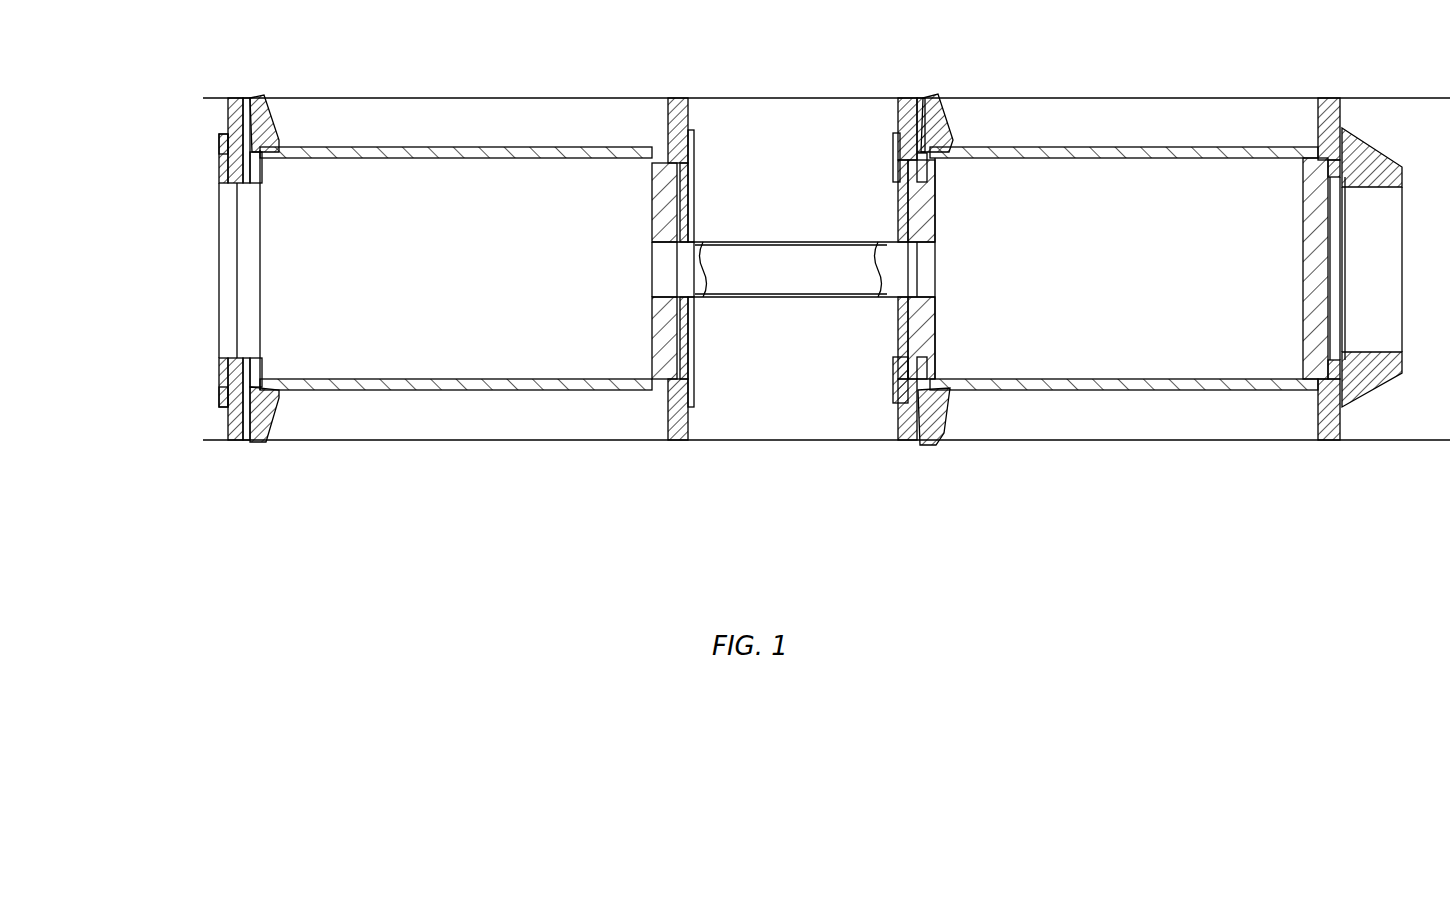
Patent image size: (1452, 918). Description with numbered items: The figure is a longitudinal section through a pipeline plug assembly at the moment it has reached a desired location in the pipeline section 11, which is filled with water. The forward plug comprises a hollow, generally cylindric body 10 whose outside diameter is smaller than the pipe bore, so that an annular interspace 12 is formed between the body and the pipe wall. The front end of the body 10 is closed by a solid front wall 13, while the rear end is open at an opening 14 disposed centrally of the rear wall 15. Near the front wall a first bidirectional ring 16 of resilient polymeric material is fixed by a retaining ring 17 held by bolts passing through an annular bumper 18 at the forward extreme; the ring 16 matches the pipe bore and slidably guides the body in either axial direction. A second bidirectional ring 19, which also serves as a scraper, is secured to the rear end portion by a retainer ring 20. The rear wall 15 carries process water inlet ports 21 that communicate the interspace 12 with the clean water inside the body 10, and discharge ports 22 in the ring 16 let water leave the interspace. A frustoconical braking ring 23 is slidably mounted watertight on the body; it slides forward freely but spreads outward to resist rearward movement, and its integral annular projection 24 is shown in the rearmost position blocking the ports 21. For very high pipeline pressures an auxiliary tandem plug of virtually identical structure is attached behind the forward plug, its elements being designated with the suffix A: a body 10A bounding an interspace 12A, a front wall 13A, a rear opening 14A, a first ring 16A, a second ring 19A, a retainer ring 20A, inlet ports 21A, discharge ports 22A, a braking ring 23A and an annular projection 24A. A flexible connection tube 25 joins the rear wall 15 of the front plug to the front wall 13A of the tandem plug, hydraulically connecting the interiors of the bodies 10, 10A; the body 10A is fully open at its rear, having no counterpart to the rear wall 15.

The hollow cylindric body 10 is at (1128, 158).
The body of tandem plug 10A is at (547, 153).
The pipeline section 11 is at (800, 98).
The annular interspace 12 is at (1262, 126).
The annular interspace of tandem plug 12A is at (585, 117).
The front wall 13 is at (1310, 205).
The front wall of tandem plug 13A is at (660, 200).
The opening 14 is at (925, 262).
The opening of tandem plug 14A is at (240, 228).
The rear wall 15 is at (925, 333).
The first ring 16 is at (1340, 122).
The first ring of tandem plug 16A is at (678, 445).
The retaining ring 17 is at (1345, 392).
The annular bumper 18 is at (1362, 402).
The second ring 19 is at (905, 450).
The second ring of tandem plug 19A is at (238, 445).
The retainer ring 20 is at (893, 140).
The retainer ring of tandem plug 20A is at (222, 372).
The process water inlet port 21 is at (930, 180).
The process water inlet port of tandem plug 21A is at (255, 190).
The discharge port 22 is at (1330, 98).
The discharge port of tandem plug 22A is at (680, 98).
The braking ring 23 is at (940, 98).
The braking ring of tandem plug 23A is at (255, 98).
The annular projection 24 is at (917, 100).
The annular projection of tandem plug 24A is at (247, 442).
The flexible connection tube 25 is at (758, 300).